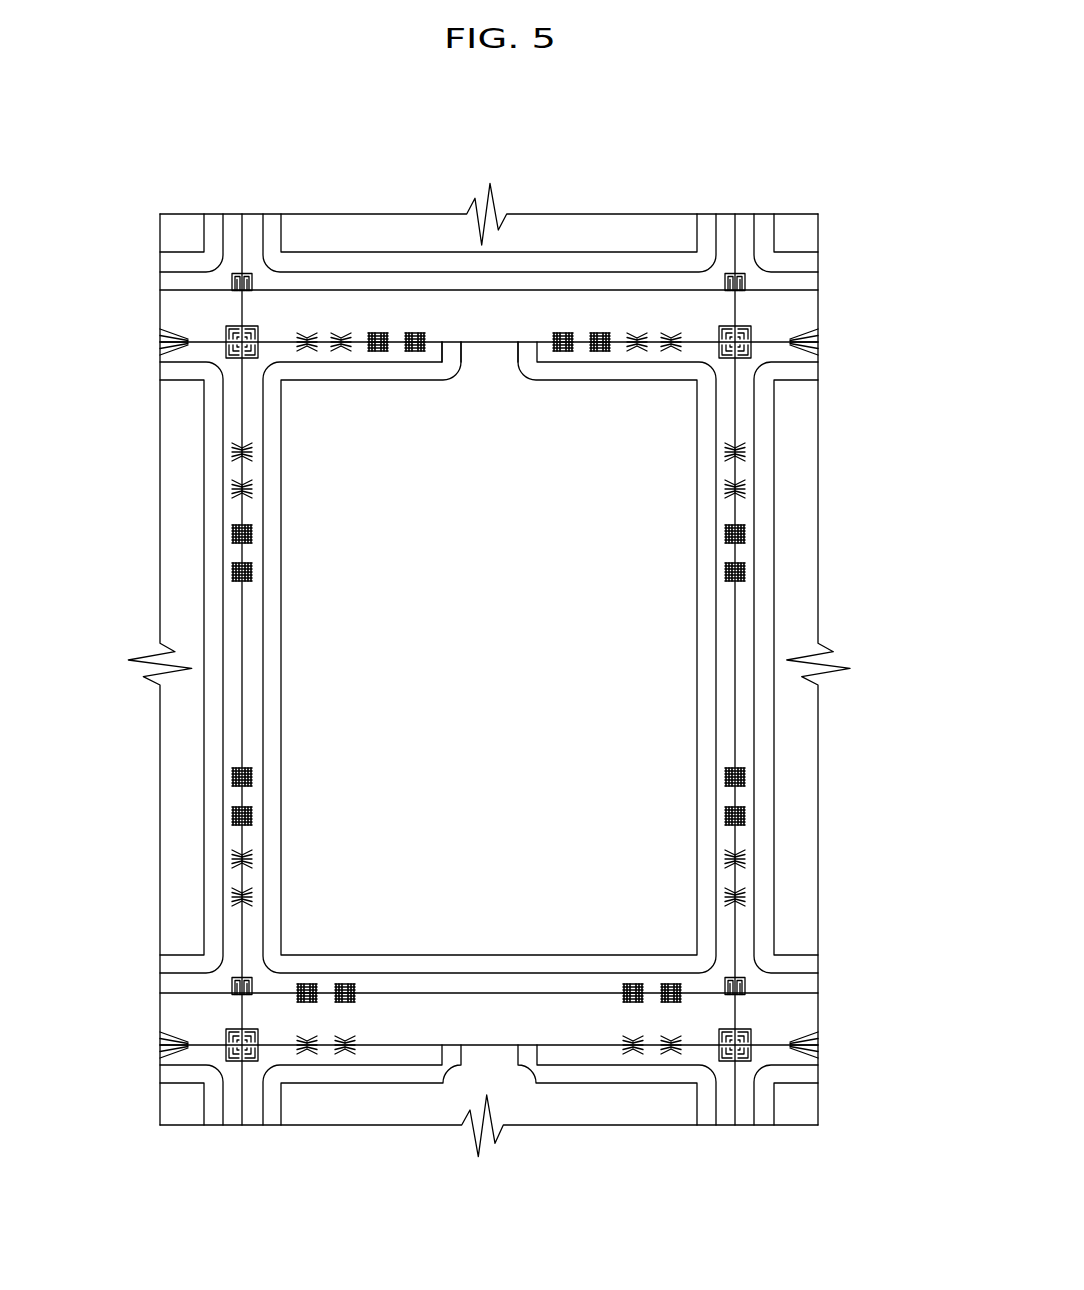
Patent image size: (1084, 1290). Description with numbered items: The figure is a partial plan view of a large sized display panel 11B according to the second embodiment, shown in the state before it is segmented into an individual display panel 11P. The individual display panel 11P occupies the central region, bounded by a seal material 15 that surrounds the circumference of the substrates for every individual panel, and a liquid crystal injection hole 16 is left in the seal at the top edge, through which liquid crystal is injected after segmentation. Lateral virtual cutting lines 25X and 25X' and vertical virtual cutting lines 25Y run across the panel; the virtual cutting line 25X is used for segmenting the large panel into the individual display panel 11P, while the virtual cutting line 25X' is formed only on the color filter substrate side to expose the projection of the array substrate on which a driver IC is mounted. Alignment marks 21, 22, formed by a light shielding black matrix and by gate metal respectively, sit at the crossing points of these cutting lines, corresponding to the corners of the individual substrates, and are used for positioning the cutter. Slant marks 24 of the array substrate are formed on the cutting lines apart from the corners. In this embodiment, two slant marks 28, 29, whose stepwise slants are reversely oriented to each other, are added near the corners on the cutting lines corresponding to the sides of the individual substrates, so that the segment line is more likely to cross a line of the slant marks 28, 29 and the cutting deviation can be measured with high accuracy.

The large sized display panel 11B is at (400, 162).
The individual display panel 11P is at (587, 628).
The seal material 15 is at (440, 368).
The liquid crystal injection hole 16 is at (487, 358).
The alignment mark 21 is at (228, 352).
The alignment mark 22 is at (228, 1055).
The slant mark 24 is at (232, 453).
The virtual cutting line 25X is at (489, 668).
The virtual cutting line 25X' is at (489, 668).
The virtual cutting line 25Y is at (735, 707).
The slant mark 28 is at (378, 354).
The slant mark 29 is at (306, 354).